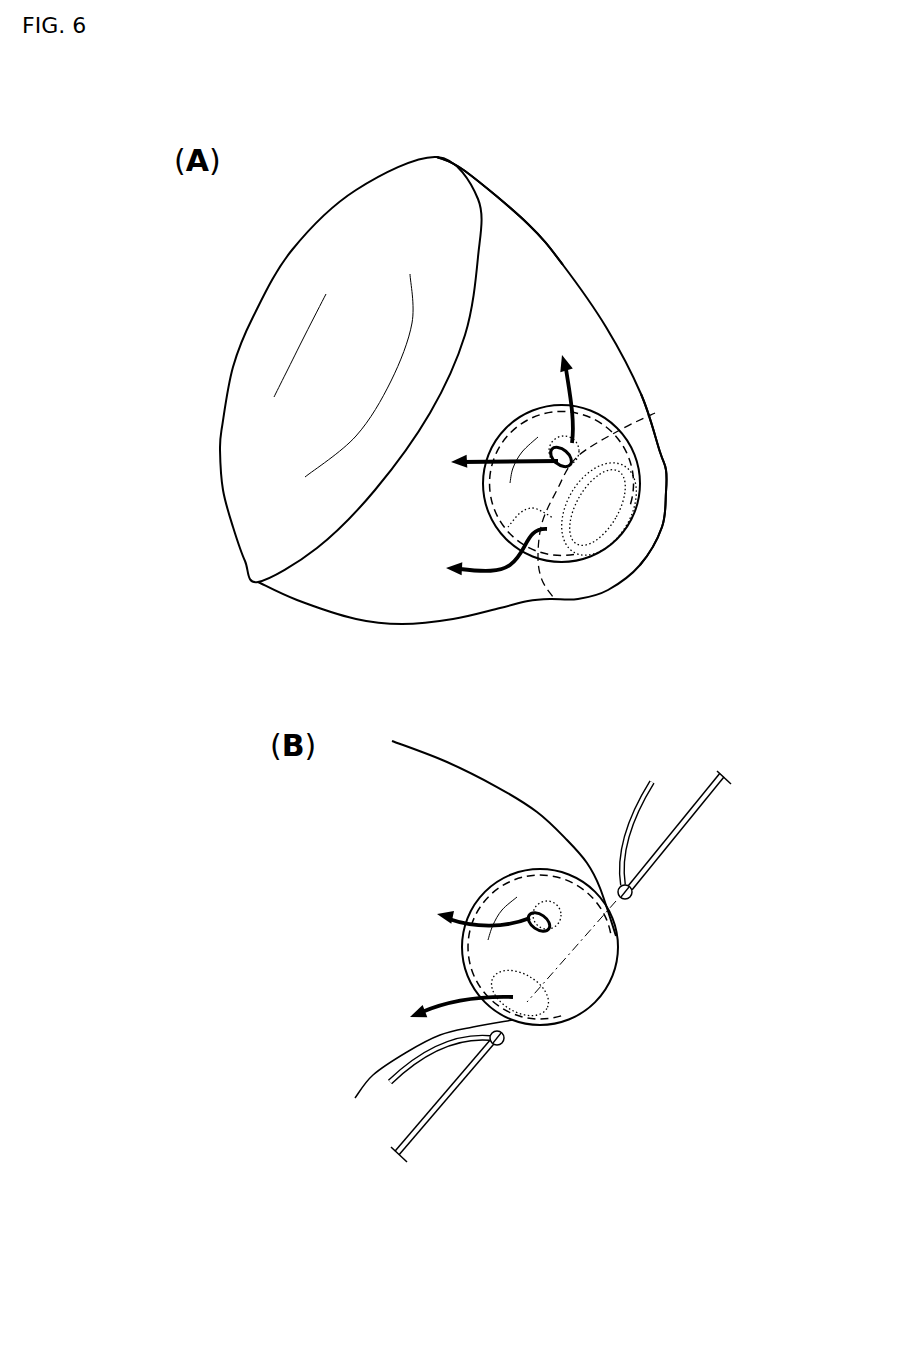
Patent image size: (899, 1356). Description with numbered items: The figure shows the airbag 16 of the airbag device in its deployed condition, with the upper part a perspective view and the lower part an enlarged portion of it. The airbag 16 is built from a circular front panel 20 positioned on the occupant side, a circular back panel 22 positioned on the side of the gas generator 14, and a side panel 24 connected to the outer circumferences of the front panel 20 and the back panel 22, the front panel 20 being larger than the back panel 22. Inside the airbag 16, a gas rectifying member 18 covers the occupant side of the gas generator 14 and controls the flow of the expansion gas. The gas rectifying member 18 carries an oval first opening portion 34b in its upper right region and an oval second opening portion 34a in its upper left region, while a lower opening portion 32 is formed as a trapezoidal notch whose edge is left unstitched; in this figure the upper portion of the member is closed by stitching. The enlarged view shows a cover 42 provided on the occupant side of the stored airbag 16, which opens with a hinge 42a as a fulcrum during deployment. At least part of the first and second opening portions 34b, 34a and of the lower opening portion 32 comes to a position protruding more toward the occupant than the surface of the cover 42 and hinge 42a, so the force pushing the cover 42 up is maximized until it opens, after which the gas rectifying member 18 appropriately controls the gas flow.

The gas generator 14 is at (624, 507).
The airbag 16 is at (566, 266).
The gas rectifying member 18 is at (592, 417).
The front panel 20 is at (368, 194).
The back panel 22 is at (668, 484).
The side panel 24 is at (527, 223).
The lower opening portion 32 is at (520, 513).
The second opening portion 34a is at (552, 446).
The first opening portion 34b is at (596, 440).
The cover 42 is at (644, 791).
The hinge 42a is at (633, 893).